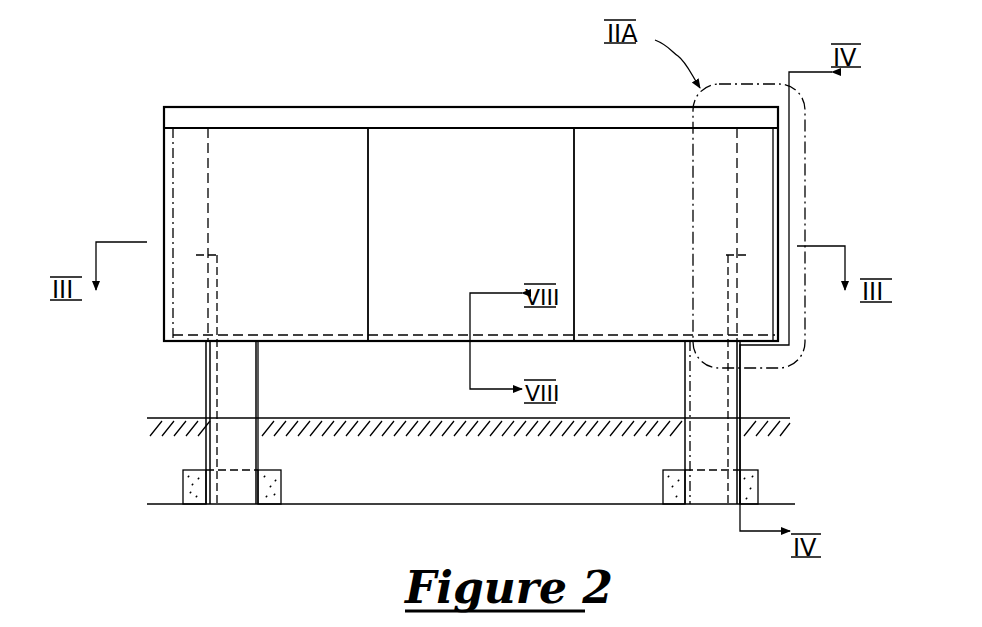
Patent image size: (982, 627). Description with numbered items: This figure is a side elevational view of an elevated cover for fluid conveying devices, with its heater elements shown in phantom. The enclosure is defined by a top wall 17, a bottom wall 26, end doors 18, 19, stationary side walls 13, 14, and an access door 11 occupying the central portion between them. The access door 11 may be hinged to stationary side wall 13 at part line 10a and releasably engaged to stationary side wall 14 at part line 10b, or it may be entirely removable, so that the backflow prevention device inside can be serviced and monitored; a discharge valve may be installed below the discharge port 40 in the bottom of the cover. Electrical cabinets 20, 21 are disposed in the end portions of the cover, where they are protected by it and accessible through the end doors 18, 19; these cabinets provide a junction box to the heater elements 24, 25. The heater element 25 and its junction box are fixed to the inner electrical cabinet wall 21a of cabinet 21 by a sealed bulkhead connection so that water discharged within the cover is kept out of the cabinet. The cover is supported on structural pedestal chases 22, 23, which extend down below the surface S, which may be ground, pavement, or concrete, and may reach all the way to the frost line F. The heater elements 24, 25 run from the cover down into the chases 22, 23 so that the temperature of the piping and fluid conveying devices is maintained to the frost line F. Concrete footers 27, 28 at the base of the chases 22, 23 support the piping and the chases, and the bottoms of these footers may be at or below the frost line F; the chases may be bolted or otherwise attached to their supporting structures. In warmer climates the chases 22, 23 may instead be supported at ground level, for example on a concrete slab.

The top wall 17 is at (470, 107).
The stationary side wall 13 is at (270, 234).
The access door 11 is at (471, 234).
The stationary side wall 14 is at (674, 234).
The part line 10a is at (368, 300).
The part line 10b is at (574, 290).
The electrical cabinet 21 is at (766, 168).
The inner electrical cabinet wall 21a is at (733, 200).
The end door 19 is at (778, 215).
The electrical cabinet 20 is at (186, 152).
The end door 18 is at (164, 212).
The structural pedestal chase 22 is at (257, 396).
The heater element 24 is at (211, 408).
The structural pedestal chase 23 is at (735, 392).
The heater element 25 is at (729, 284).
The bottom wall 26 is at (620, 342).
The discharge port 40 is at (451, 343).
The concrete footer 27 is at (275, 480).
The concrete footer 28 is at (748, 478).
The surface S is at (572, 417).
The frost line F is at (423, 504).